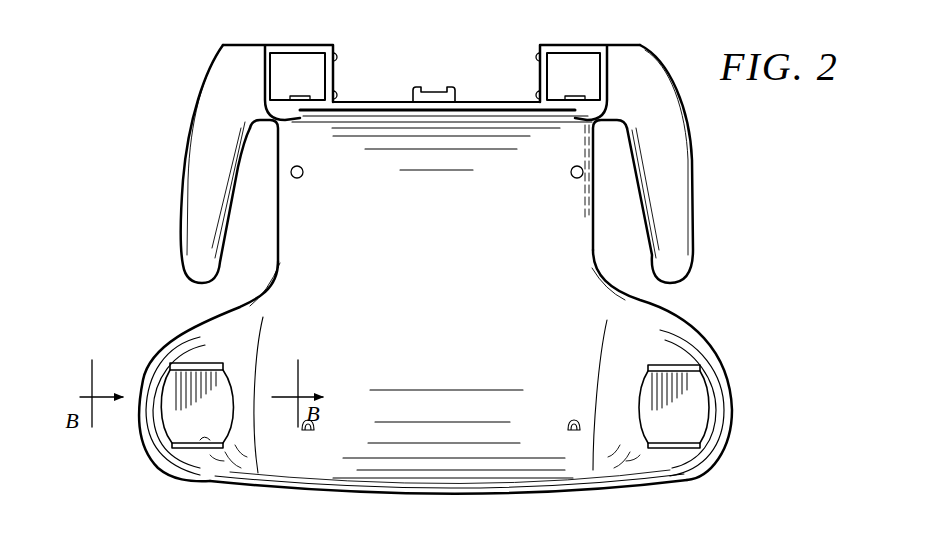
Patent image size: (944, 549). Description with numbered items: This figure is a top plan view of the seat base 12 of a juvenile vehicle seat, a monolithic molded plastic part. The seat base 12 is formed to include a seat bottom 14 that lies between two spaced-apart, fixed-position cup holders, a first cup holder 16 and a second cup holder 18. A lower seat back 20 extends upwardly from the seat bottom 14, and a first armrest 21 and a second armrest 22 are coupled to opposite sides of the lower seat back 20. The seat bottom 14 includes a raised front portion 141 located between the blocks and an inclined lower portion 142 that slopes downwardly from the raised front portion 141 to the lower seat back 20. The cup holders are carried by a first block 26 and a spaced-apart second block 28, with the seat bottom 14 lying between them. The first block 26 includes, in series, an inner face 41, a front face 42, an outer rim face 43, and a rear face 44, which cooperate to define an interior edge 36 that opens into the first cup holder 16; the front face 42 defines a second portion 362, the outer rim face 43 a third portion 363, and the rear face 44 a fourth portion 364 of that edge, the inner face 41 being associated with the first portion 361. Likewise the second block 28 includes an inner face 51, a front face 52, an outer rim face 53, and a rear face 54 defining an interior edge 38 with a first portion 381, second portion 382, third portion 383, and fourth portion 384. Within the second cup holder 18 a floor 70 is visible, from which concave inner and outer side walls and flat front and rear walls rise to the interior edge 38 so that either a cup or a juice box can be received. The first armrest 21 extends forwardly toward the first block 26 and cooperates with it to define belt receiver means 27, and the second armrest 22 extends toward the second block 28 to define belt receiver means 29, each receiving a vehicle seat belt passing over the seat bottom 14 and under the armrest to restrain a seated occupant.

The seat base 12 is at (165, 128).
The seat bottom 14 is at (493, 369).
The raised front portion 141 is at (488, 416).
The inclined lower portion 142 is at (455, 308).
The first cup holder 16 is at (716, 398).
The second cup holder 18 is at (193, 443).
The lower seat back 20 is at (397, 119).
The first armrest 21 is at (697, 199).
The second armrest 22 is at (178, 218).
The first block 26 is at (692, 456).
The belt receiver means 27 is at (621, 194).
The second block 28 is at (203, 465).
The belt receiver means 29 is at (246, 237).
The interior edge 36 is at (667, 402).
The first portion of interior edge 361 is at (637, 373).
The second portion of interior edge 362 is at (673, 443).
The third portion of interior edge 363 is at (710, 417).
The fourth portion of interior edge 364 is at (660, 363).
The interior edge 38 is at (194, 390).
The first portion of interior edge 381 is at (242, 390).
The second portion of interior edge 382 is at (170, 438).
The third portion of interior edge 383 is at (167, 380).
The fourth portion of interior edge 384 is at (190, 362).
The inner face 41 is at (631, 395).
The front face 42 is at (655, 458).
The outer rim face 43 is at (723, 435).
The rear face 44 is at (683, 360).
The inner face 51 is at (217, 460).
The front face 52 is at (217, 463).
The outer rim face 53 is at (153, 427).
The rear face 54 is at (203, 330).
The floor 70 is at (220, 428).